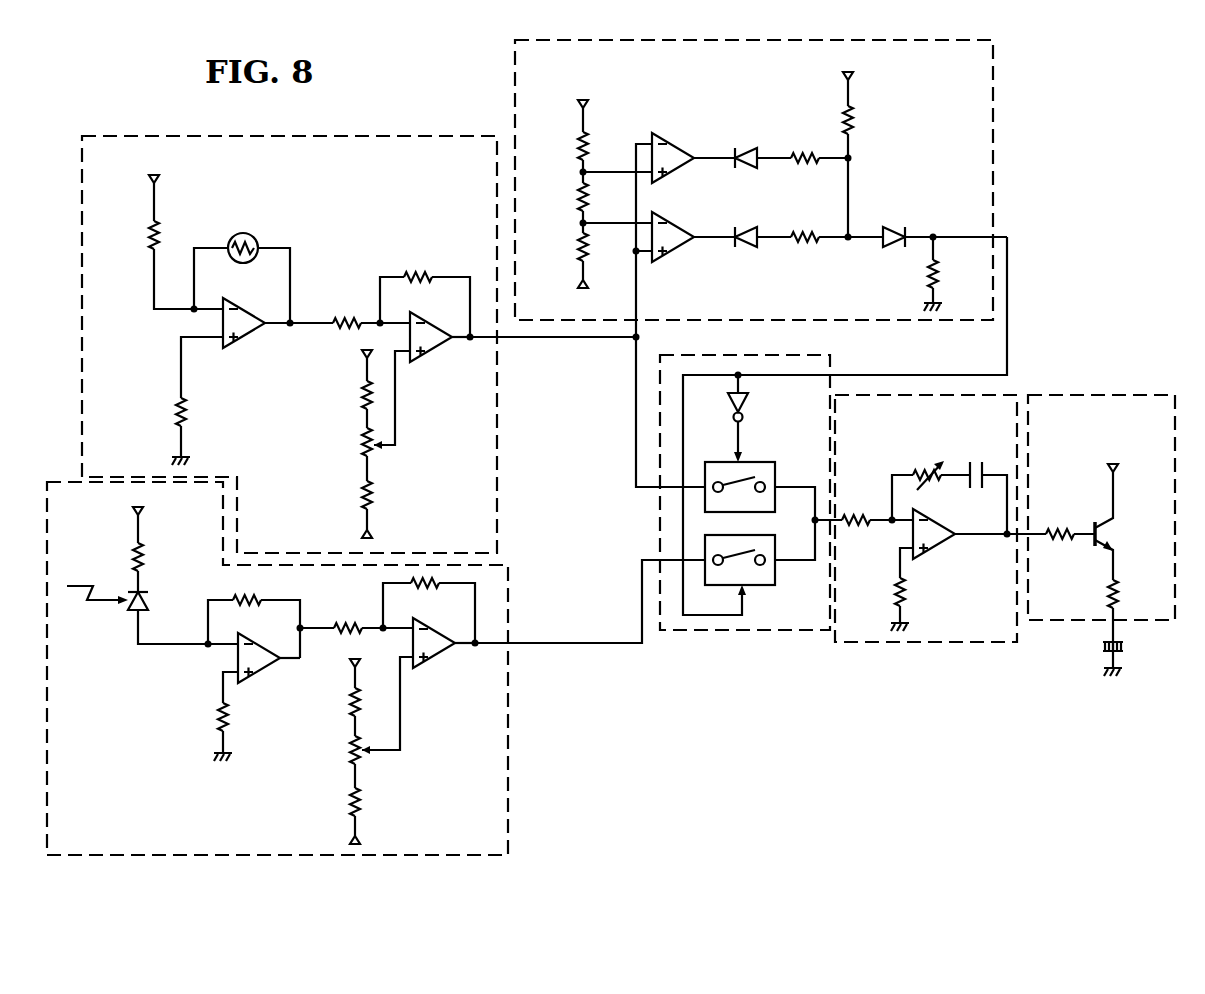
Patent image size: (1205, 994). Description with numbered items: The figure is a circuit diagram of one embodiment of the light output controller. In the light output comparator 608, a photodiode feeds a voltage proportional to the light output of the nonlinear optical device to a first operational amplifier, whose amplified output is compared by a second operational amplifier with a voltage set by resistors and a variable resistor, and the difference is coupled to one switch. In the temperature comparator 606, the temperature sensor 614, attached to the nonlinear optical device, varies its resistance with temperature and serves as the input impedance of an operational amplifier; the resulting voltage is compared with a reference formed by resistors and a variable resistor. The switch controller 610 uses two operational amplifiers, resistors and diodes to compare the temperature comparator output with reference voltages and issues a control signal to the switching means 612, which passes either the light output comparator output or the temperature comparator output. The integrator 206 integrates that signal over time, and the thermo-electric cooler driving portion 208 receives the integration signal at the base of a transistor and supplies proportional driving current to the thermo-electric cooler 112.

The temperature comparator 606 is at (499, 480).
The light output comparator 608 is at (508, 772).
The switch controller 610 is at (993, 160).
The switching means 612 is at (830, 355).
The integrator 206 is at (914, 642).
The thermo-electric cooler driving portion 208 is at (1055, 620).
The temperature sensor 614 is at (243, 233).
The thermo-electric cooler 112 is at (1135, 642).